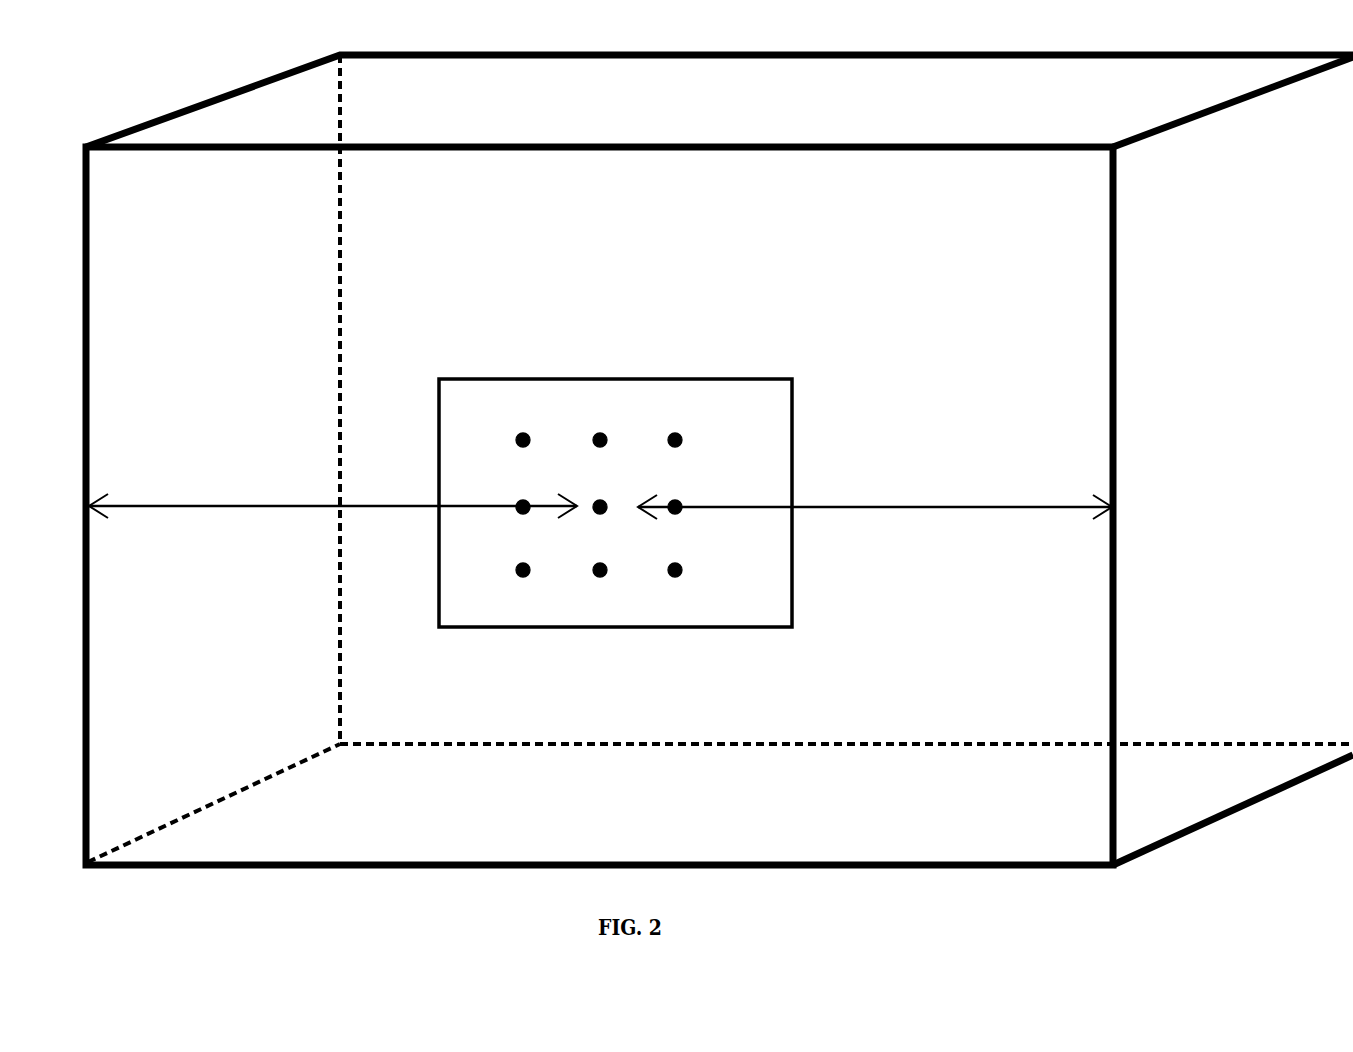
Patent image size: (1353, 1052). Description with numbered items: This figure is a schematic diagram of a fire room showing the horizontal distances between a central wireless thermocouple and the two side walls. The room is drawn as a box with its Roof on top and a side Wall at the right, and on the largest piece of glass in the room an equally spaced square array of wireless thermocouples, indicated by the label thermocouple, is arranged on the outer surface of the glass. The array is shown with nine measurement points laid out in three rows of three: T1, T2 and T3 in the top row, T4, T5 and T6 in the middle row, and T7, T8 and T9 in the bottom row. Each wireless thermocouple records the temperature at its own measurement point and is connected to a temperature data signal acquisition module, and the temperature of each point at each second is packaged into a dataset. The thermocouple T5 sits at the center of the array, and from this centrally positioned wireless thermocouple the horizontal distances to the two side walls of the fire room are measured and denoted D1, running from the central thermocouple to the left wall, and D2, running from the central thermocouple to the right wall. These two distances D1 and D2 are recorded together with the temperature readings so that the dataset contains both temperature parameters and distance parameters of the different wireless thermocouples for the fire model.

The wireless thermocouple T1 is at (537, 445).
The wireless thermocouple T2 is at (614, 445).
The wireless thermocouple T3 is at (689, 445).
The wireless thermocouple T4 is at (537, 512).
The central wireless thermocouple T5 is at (614, 512).
The wireless thermocouple T6 is at (689, 512).
The wireless thermocouple T7 is at (537, 575).
The wireless thermocouple T8 is at (614, 575).
The wireless thermocouple T9 is at (689, 575).
The horizontal distance to first side wall D1 is at (332, 468).
The horizontal distance to second side wall D2 is at (875, 469).
The roof Roof is at (741, 90).
The side wall Wall is at (719, 460).
The wireless thermocouple array thermocouple is at (598, 405).